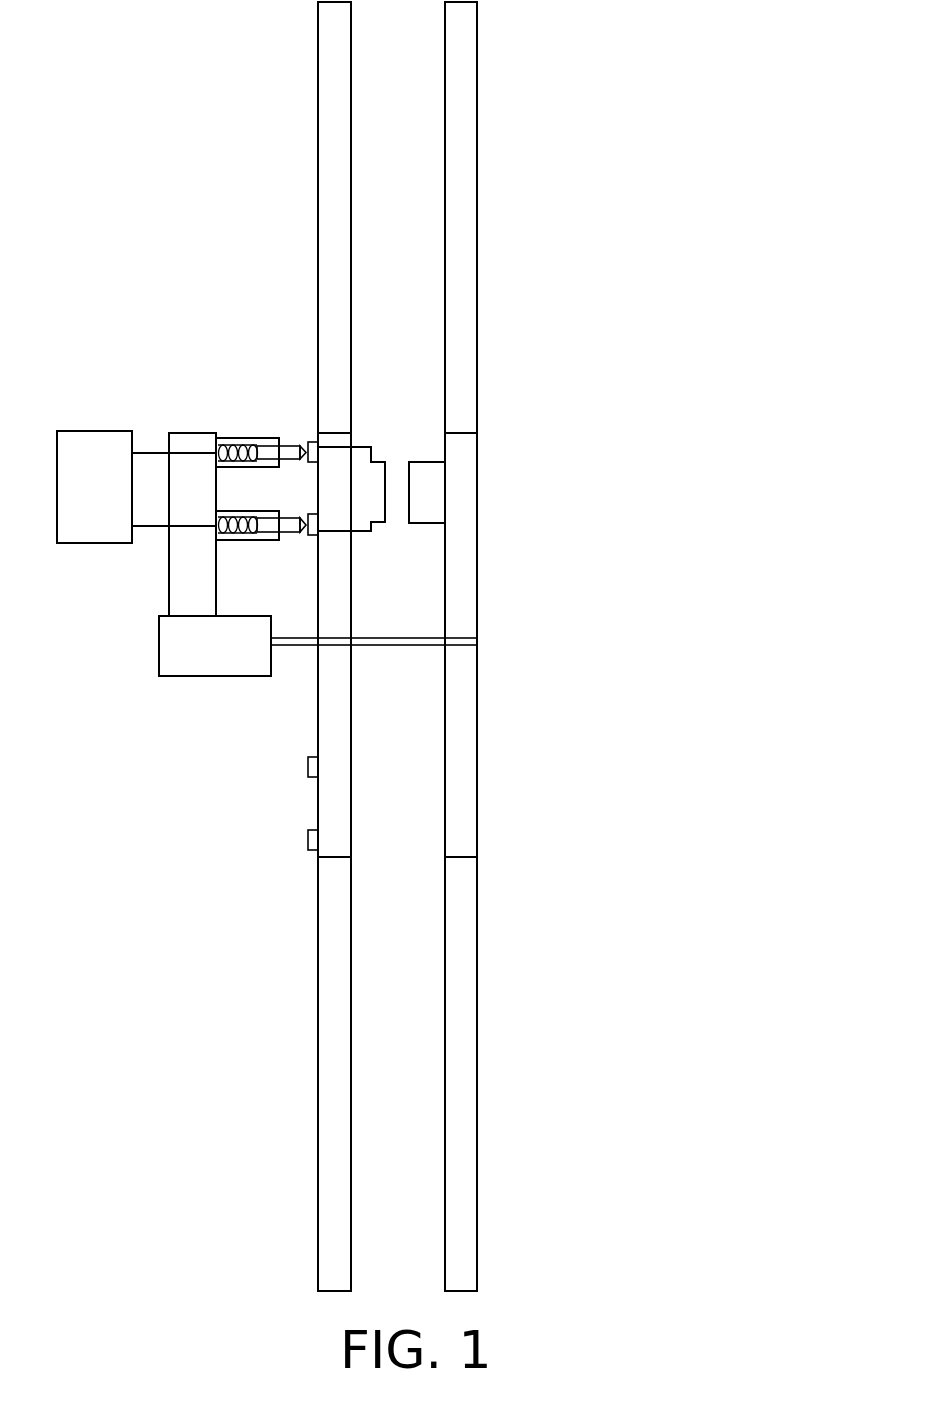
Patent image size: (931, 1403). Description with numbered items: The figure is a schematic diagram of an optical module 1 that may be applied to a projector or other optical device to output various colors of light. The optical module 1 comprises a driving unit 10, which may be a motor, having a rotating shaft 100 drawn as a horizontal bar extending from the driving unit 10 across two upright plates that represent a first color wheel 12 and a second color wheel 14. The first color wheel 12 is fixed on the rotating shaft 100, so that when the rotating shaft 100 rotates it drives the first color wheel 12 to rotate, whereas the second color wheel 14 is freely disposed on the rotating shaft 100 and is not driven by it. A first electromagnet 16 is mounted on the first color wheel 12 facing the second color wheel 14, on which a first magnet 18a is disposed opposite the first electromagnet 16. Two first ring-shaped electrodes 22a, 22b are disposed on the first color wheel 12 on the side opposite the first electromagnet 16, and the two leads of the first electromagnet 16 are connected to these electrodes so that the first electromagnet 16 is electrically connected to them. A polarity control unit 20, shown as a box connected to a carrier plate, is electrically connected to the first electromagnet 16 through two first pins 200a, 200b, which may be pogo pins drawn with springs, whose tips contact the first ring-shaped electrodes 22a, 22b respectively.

The optical module 1 is at (706, 52).
The driving unit 10 is at (215, 646).
The first color wheel 12 is at (326, 99).
The second color wheel 14 is at (462, 100).
The first electromagnet 16 is at (372, 477).
The first magnet 18a is at (432, 487).
The polarity control unit 20 is at (136, 523).
The first ring-shaped electrode 22a is at (315, 443).
The first ring-shaped electrode 22b is at (315, 534).
The rotating shaft 100 is at (425, 633).
The first pin 200a is at (270, 452).
The first pin 200b is at (272, 526).